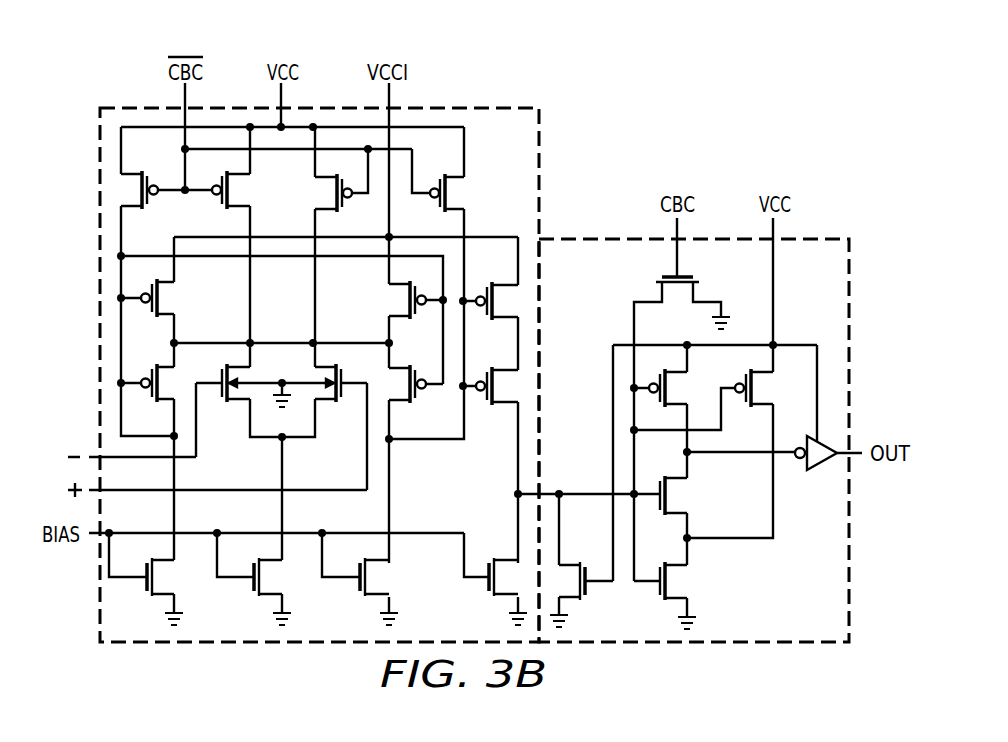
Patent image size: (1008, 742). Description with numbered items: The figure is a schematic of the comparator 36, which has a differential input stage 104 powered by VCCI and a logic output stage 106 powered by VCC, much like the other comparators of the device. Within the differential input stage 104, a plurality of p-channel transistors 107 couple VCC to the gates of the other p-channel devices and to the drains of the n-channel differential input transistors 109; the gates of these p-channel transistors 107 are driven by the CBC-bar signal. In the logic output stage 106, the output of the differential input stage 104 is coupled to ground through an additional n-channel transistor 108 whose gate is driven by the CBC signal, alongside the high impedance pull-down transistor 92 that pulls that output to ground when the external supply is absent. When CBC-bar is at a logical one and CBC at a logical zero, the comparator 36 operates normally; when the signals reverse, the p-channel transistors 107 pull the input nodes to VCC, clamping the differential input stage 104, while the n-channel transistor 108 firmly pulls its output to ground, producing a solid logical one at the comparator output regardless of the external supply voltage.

The comparator 36 is at (667, 132).
The differential input stage 104 is at (542, 153).
The logic output stage 106 is at (828, 239).
The p-channel transistors 107 is at (155, 203).
The n-channel transistor 108 is at (660, 288).
The n-channel differential input transistors 109 is at (233, 403).
The pull-down transistor 92 is at (590, 589).